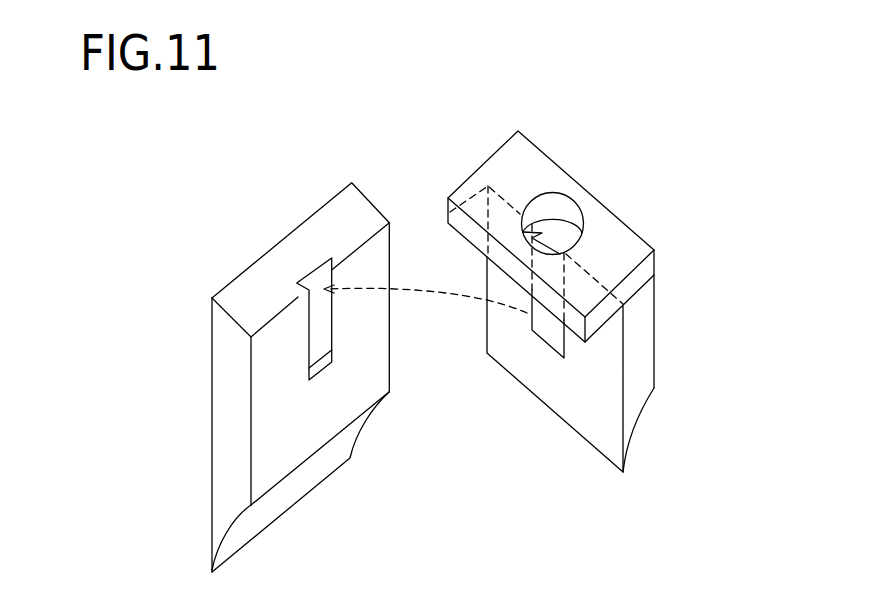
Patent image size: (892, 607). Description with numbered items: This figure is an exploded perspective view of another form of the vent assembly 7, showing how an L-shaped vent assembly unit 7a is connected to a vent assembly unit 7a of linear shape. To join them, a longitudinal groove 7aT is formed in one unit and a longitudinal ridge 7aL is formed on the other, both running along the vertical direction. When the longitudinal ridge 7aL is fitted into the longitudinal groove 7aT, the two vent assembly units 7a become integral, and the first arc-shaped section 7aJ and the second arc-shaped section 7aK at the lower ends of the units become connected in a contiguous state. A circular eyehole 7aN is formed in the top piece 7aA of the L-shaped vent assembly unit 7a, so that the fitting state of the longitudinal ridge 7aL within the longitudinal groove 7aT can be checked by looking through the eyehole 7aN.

The terminal 7 is at (180, 538).
The vent assembly unit 7a is at (263, 400).
The top piece 7aA is at (505, 177).
The circular eyehole 7aN is at (562, 207).
The longitudinal groove 7aT is at (318, 278).
The longitudinal ridge 7aL is at (548, 330).
The first arc-shaped section 7aJ is at (638, 413).
The second arc-shaped section 7aK is at (270, 508).